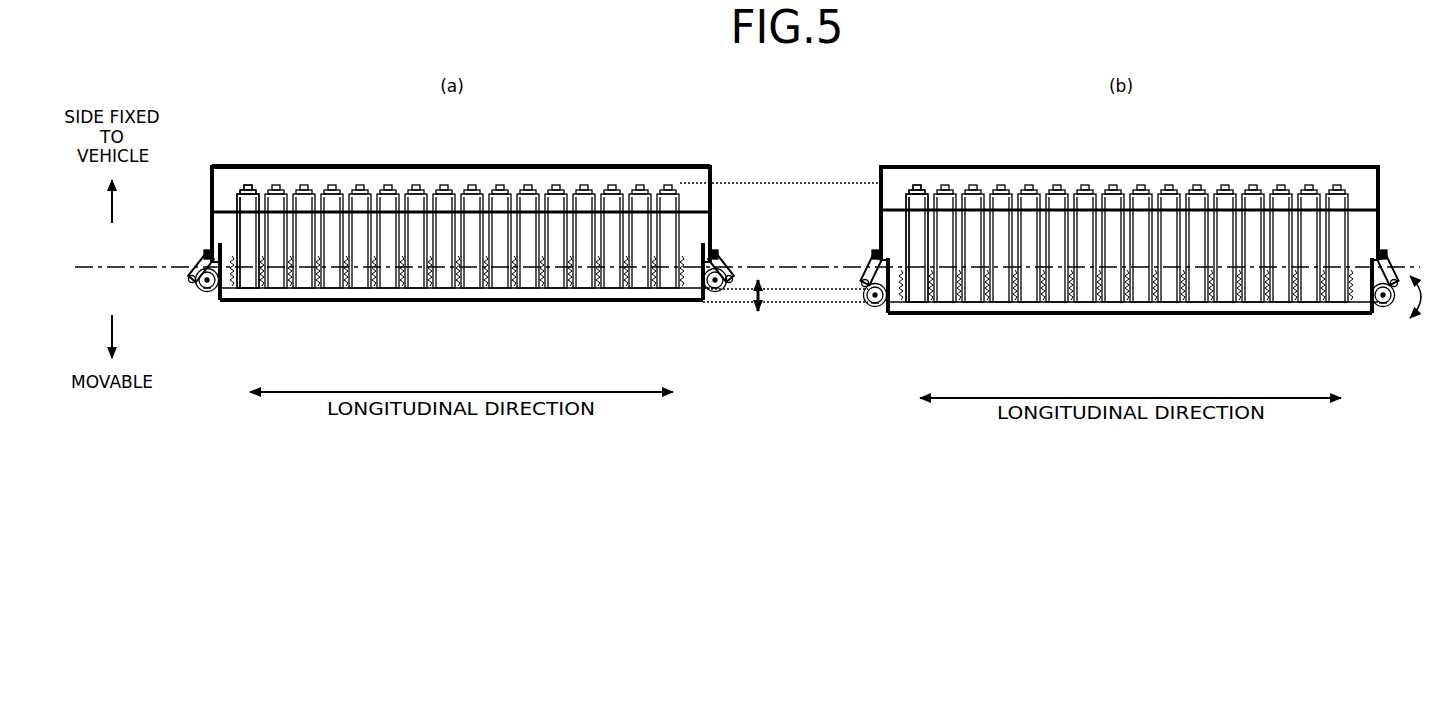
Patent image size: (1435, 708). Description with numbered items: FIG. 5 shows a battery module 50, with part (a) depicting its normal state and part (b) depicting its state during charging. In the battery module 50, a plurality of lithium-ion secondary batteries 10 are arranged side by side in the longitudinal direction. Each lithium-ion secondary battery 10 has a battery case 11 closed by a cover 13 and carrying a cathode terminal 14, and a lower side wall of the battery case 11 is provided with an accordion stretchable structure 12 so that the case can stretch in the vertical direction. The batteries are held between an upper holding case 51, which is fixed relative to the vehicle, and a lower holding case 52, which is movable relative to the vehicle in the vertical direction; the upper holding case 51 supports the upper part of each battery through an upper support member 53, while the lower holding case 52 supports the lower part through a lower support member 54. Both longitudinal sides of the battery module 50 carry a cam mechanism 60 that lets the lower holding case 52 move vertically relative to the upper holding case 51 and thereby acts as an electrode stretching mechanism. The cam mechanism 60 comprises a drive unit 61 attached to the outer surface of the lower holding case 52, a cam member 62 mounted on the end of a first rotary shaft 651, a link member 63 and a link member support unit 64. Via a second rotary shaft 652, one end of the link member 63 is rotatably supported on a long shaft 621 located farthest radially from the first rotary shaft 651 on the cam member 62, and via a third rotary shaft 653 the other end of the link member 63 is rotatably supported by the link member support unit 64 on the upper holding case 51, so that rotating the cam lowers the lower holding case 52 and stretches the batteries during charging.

The lithium-ion secondary battery 10 is at (264, 182).
The battery case 11 is at (232, 250).
The accordion stretchable structure 12 is at (212, 228).
The cover 13 is at (243, 188).
The cathode terminal 14 is at (249, 188).
The battery module 50 is at (668, 125).
The upper holding case 51 is at (548, 166).
The lower holding case 52 is at (572, 302).
The upper support member 53 is at (220, 210).
The lower support member 54 is at (230, 300).
The cam mechanism 60 is at (761, 300).
The drive unit 61 is at (212, 292).
The cam member 62 is at (200, 297).
The link member 63 is at (194, 262).
The link member support unit 64 is at (215, 247).
The long shaft 621 is at (196, 295).
The first rotary shaft 651 is at (201, 293).
The second rotary shaft 652 is at (182, 283).
The third rotary shaft 653 is at (205, 253).